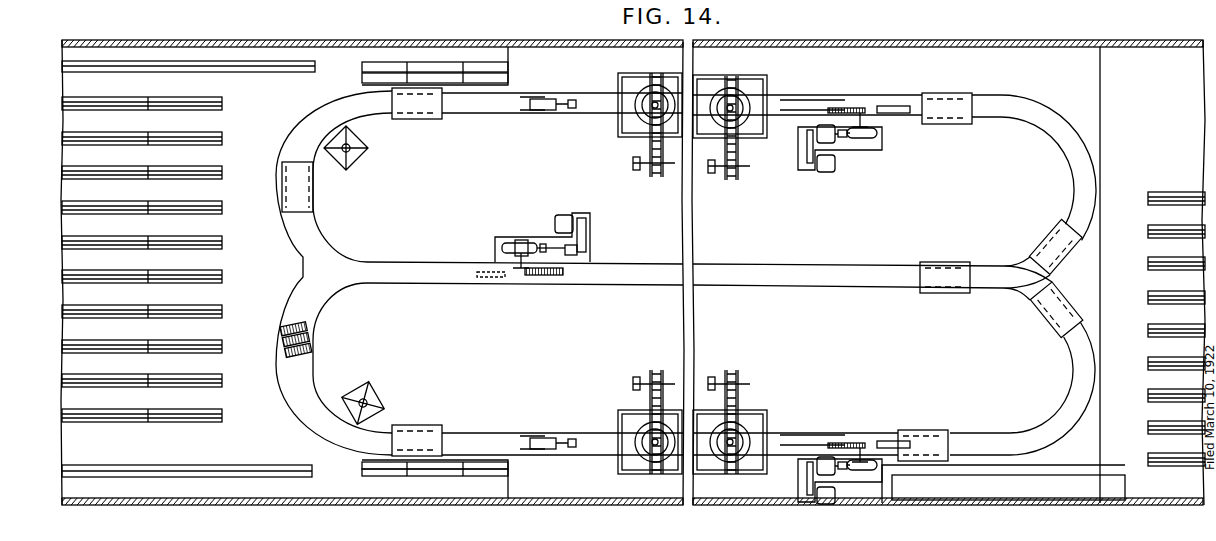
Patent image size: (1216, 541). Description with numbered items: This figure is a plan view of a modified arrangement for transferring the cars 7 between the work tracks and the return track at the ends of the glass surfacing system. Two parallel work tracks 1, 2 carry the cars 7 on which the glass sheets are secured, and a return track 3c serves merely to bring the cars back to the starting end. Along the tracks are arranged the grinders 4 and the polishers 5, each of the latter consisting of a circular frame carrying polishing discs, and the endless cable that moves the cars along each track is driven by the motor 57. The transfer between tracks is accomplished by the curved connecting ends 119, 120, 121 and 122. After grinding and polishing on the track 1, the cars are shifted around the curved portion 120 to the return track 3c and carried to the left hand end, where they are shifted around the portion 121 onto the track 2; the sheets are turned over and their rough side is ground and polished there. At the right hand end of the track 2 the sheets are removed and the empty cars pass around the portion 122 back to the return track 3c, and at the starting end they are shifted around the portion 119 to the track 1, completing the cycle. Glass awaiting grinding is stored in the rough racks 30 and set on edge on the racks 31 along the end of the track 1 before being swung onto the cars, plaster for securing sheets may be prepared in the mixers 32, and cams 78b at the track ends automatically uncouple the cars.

The work track 1 is at (483, 106).
The work track 2 is at (480, 440).
The return track 3c is at (596, 273).
The grinders 4 is at (638, 110).
The polishers 5 is at (747, 120).
The trucks or cars 7 is at (421, 111).
The rough racks 30 is at (222, 207).
The racks 31 is at (442, 75).
The mixers 32 is at (378, 396).
The motor 57 is at (563, 214).
The cams 78b is at (888, 440).
The curved connecting end 119 is at (312, 150).
The curved connecting end 120 is at (1068, 160).
The curved connecting end 121 is at (318, 302).
The curved connecting end 122 is at (1066, 391).